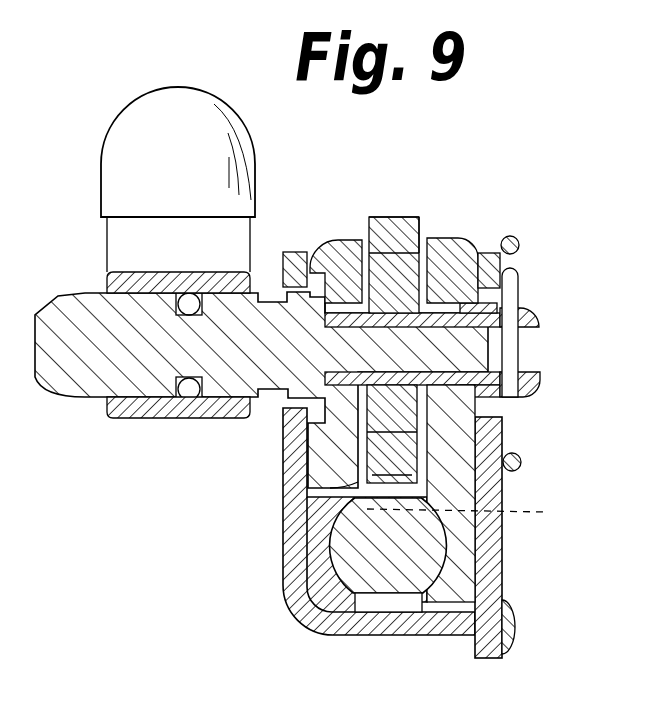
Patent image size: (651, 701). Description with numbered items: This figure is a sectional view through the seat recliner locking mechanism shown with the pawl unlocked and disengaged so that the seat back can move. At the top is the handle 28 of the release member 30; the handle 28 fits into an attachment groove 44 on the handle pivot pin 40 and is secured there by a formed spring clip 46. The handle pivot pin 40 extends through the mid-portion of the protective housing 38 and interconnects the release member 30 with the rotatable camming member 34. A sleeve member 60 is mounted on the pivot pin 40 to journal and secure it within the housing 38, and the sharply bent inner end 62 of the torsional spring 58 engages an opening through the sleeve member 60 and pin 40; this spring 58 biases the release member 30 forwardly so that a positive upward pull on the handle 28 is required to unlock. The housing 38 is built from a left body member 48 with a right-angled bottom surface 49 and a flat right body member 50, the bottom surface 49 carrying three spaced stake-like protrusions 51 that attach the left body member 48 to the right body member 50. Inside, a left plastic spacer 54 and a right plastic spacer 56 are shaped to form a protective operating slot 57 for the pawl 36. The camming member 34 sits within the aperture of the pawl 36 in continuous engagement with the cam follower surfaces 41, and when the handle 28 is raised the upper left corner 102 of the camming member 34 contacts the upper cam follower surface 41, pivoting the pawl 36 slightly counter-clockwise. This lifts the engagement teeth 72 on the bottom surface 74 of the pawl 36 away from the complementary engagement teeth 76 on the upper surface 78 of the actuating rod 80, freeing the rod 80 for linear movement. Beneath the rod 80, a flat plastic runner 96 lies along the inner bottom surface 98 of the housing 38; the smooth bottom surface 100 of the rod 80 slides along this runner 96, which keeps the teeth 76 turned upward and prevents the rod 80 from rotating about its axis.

The handle 28 is at (105, 140).
The release member 30 is at (108, 235).
The handle pivot pin 40 is at (72, 295).
The attachment groove 44 is at (177, 312).
The spring clip 46 is at (190, 402).
The left plastic spacer 54 is at (300, 252).
The camming member 34 is at (352, 256).
The pawl 36 is at (393, 252).
The upper left corner of the camming member 102 is at (378, 217).
The cam follower surfaces 41 is at (408, 245).
The protective operating slot 57 is at (425, 240).
The right plastic spacer 56 is at (486, 253).
The spring 58 is at (521, 243).
The inner end of the spring 62 is at (513, 287).
The sleeve member 60 is at (542, 320).
The left body member 48 is at (300, 525).
The right body member 50 is at (503, 549).
The stake-like protrusions 51 is at (514, 632).
The engagement teeth 72 is at (430, 497).
The bottom surface 74 is at (352, 486).
The upper surface 78 is at (362, 493).
The engagement teeth 76 is at (465, 511).
The actuating rod 80 is at (345, 555).
The smooth bottom surface 100 is at (404, 606).
The inner bottom surface 98 is at (367, 606).
The bottom surface 49 is at (378, 634).
The runner 96 is at (440, 633).
The housing 38 is at (530, 580).